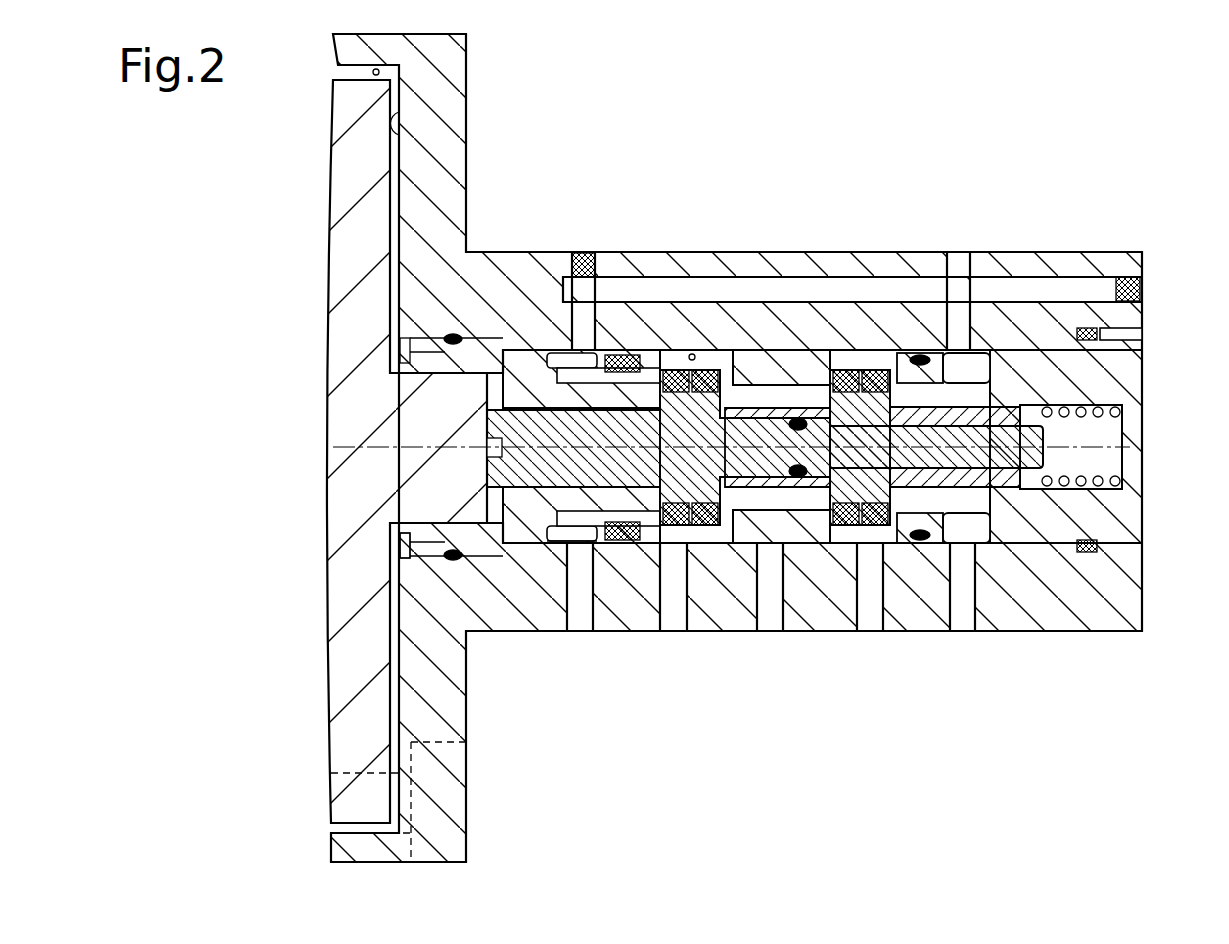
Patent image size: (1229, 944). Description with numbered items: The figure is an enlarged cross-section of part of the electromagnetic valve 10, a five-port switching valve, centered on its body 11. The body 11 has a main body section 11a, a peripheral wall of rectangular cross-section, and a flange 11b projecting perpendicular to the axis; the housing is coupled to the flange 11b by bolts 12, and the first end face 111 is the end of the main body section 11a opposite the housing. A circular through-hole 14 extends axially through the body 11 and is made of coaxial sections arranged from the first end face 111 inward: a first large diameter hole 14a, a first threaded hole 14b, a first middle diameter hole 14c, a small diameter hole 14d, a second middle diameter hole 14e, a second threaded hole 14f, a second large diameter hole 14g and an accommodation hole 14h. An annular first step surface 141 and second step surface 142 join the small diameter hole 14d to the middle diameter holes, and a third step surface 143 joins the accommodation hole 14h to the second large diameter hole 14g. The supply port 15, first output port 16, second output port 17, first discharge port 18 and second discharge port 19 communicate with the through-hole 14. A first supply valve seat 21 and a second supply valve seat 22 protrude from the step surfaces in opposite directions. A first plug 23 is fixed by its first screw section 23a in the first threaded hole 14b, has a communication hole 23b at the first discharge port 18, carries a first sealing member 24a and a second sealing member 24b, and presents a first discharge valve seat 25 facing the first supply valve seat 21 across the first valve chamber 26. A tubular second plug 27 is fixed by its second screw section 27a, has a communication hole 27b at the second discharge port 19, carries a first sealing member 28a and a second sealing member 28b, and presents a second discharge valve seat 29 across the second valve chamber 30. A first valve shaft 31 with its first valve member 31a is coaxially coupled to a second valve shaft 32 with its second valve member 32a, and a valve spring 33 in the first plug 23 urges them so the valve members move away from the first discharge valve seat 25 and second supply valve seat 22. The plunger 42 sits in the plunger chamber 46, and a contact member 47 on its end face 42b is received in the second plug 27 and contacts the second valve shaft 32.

The electromagnetic valve 10 is at (1141, 219).
The body 11 is at (468, 42).
The main body section 11a is at (920, 268).
The flange 11b is at (458, 158).
The first end face 111 is at (1145, 262).
The bolts 12 is at (450, 742).
The through-hole 14 is at (662, 365).
The first large diameter hole 14a is at (1140, 335).
The first threaded hole 14b is at (990, 332).
The first middle diameter hole 14c is at (878, 350).
The small diameter hole 14d is at (778, 390).
The second middle diameter hole 14e is at (694, 355).
The second threaded hole 14f is at (540, 350).
The second large diameter hole 14g is at (418, 335).
The accommodation hole 14h is at (337, 76).
The first step surface 141 is at (745, 352).
The second step surface 142 is at (700, 352).
The third step surface 143 is at (397, 122).
The supply port 15 is at (770, 633).
The first output port 16 is at (870, 633).
The second output port 17 is at (675, 633).
The first discharge port 18 is at (962, 633).
The second discharge port 19 is at (578, 633).
The first supply valve seat 21 is at (812, 368).
The second supply valve seat 22 is at (851, 447).
The first plug 23 is at (1040, 352).
The first screw section 23a is at (1012, 560).
The communication hole 23b is at (990, 540).
The first sealing member 24a is at (917, 545).
The second sealing member 24b is at (1085, 560).
The first discharge valve seat 25 is at (880, 360).
The first valve chamber 26 is at (830, 545).
The second plug 27 is at (497, 350).
The second screw section 27a is at (535, 560).
The communication hole 27b is at (565, 492).
The first sealing member 28a is at (628, 545).
The second sealing member 28b is at (490, 632).
The second discharge valve seat 29 is at (639, 448).
The second valve chamber 30 is at (695, 535).
The first valve shaft 31 is at (782, 508).
The first valve member 31a is at (845, 352).
The second valve shaft 32 is at (600, 633).
The second valve member 32a is at (607, 355).
The valve spring 33 is at (1058, 448).
The plunger 42 is at (340, 742).
The end face 42b is at (396, 202).
The plunger chamber 46 is at (378, 73).
The contact member 47 is at (432, 535).